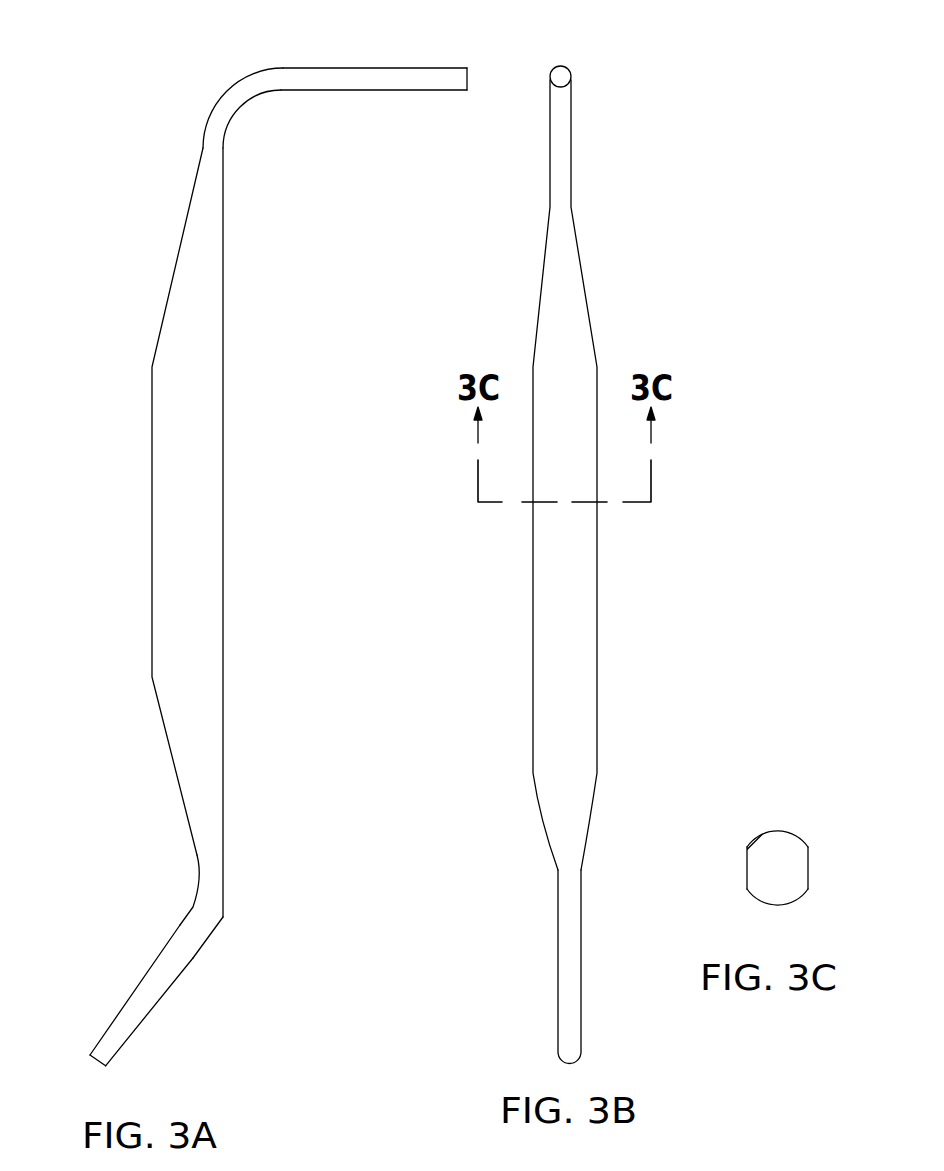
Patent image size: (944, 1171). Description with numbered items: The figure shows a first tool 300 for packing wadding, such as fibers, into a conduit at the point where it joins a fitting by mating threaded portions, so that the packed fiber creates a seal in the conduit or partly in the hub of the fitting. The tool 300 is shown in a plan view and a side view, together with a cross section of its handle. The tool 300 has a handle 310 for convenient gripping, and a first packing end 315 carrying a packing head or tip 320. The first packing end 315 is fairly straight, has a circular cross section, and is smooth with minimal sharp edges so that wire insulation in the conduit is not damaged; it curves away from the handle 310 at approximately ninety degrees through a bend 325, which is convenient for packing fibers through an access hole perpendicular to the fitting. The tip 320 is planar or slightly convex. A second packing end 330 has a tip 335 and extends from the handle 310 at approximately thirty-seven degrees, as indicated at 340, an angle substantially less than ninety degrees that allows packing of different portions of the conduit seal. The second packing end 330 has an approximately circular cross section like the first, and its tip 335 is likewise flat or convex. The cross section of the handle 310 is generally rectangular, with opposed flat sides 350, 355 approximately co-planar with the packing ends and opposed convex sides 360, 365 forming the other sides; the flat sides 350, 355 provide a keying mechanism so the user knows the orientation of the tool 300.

In FIG. 3A, the first tool 300 is at (127, 98).
In FIG. 3B, the first tool 300 is at (673, 118).
In FIG. 3A, the handle 310 is at (224, 520).
In FIG. 3B, the handle 310 is at (532, 570).
In FIG. 3A, the first packing end 315 is at (379, 91).
In FIG. 3B, the first packing end 315 is at (572, 77).
In FIG. 3A, the packing head or tip 320 is at (469, 78).
In FIG. 3A, the proximal bend 325 is at (236, 87).
In FIG. 3A, the second packing end 330 is at (157, 1004).
In FIG. 3B, the second packing end 330 is at (557, 958).
In FIG. 3A, the tip 335 is at (93, 1062).
In FIG. 3A, the angle 340 is at (226, 917).
In FIG. 3C, the flat side 350 is at (747, 868).
In FIG. 3C, the flat side 355 is at (808, 868).
In FIG. 3C, the convex side 360 is at (776, 836).
In FIG. 3C, the convex side 365 is at (778, 906).